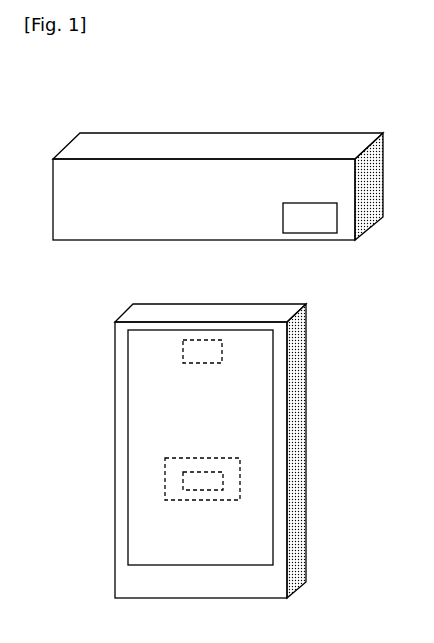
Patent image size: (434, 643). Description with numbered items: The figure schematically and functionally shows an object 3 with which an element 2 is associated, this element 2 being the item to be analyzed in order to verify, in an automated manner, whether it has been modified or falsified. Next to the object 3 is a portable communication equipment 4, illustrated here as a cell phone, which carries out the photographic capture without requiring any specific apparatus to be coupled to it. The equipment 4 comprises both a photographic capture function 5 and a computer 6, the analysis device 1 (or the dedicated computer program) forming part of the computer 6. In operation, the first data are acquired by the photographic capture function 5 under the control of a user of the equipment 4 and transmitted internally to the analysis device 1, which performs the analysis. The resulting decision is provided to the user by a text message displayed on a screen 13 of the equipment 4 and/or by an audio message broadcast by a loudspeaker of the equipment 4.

The analysis device 1 is at (183, 480).
The element 2 is at (337, 215).
The object 3 is at (120, 133).
The equipment 4 is at (306, 418).
The photographic capture function 5 is at (183, 351).
The computer 6 is at (165, 470).
The screen 13 is at (128, 541).